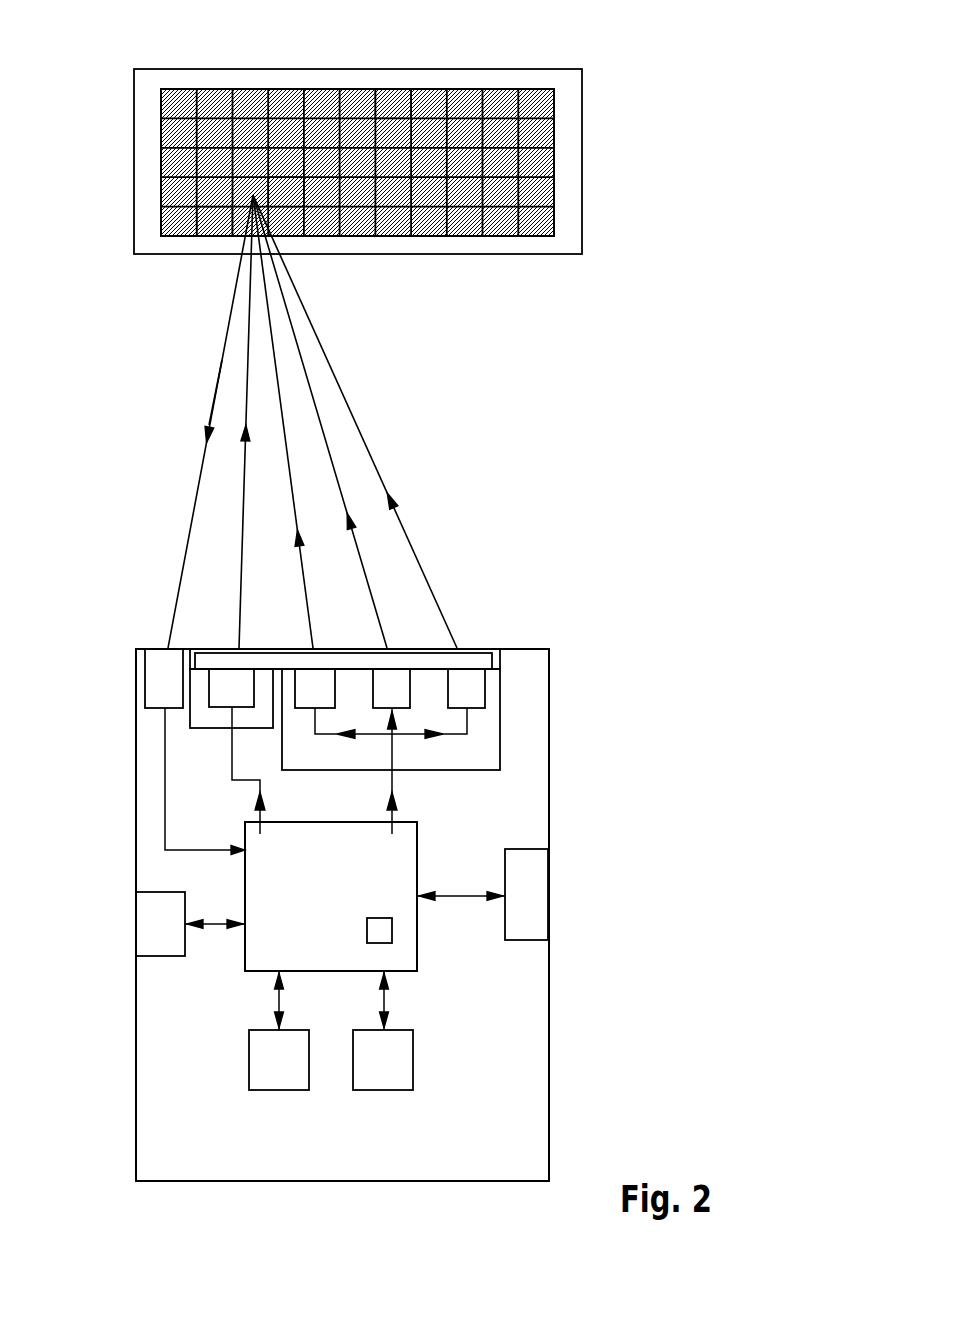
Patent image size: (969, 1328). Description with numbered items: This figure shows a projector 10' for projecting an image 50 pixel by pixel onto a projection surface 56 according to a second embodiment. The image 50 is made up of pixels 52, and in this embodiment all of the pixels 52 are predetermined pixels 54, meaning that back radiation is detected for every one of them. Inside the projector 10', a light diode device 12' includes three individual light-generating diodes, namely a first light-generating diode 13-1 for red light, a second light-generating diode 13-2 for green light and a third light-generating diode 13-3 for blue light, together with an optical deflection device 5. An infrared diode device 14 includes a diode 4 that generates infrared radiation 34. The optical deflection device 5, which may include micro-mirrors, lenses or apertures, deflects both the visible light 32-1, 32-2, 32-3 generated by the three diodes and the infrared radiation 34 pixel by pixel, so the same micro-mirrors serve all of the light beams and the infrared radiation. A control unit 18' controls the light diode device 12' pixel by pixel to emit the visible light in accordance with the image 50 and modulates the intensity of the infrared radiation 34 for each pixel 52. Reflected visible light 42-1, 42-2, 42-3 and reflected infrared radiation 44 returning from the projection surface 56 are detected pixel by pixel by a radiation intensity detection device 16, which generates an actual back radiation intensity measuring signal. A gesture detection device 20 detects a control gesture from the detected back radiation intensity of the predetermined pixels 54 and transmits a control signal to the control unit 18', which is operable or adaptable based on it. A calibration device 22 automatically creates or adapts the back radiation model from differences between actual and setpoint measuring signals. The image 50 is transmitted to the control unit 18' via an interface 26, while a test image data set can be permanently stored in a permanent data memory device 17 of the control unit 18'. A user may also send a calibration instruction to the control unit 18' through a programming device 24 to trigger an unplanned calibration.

The diode 4 is at (232, 690).
The optical deflection device 5 is at (477, 660).
The projector 10' is at (388, 915).
The light diode device 12' is at (402, 643).
The first light-generating diode 13-1 is at (317, 692).
The second light-generating diode 13-2 is at (392, 688).
The third light-generating diode 13-3 is at (477, 688).
The infrared diode device 14 is at (213, 718).
The radiation intensity detection device 16 is at (165, 663).
The permanent data memory device 17 is at (385, 932).
The control unit 18' is at (369, 894).
The gesture detection device 20 is at (405, 1065).
The calibration device 22 is at (258, 1065).
The programming device 24 is at (532, 907).
The interface 26 is at (157, 934).
The light 32-1 is at (287, 438).
The light 32-2 is at (330, 458).
The light 32-3 is at (380, 480).
The infrared radiation 34 is at (244, 483).
The reflected visible light 42-1 is at (215, 373).
The reflected visible light 42-2 is at (212, 395).
The reflected visible light 42-3 is at (208, 410).
The reflected infrared radiation 44 is at (197, 492).
The image 50 is at (538, 140).
The pixels 52 is at (388, 135).
The predetermined pixels 54 is at (183, 188).
The projection surface 56 is at (570, 240).